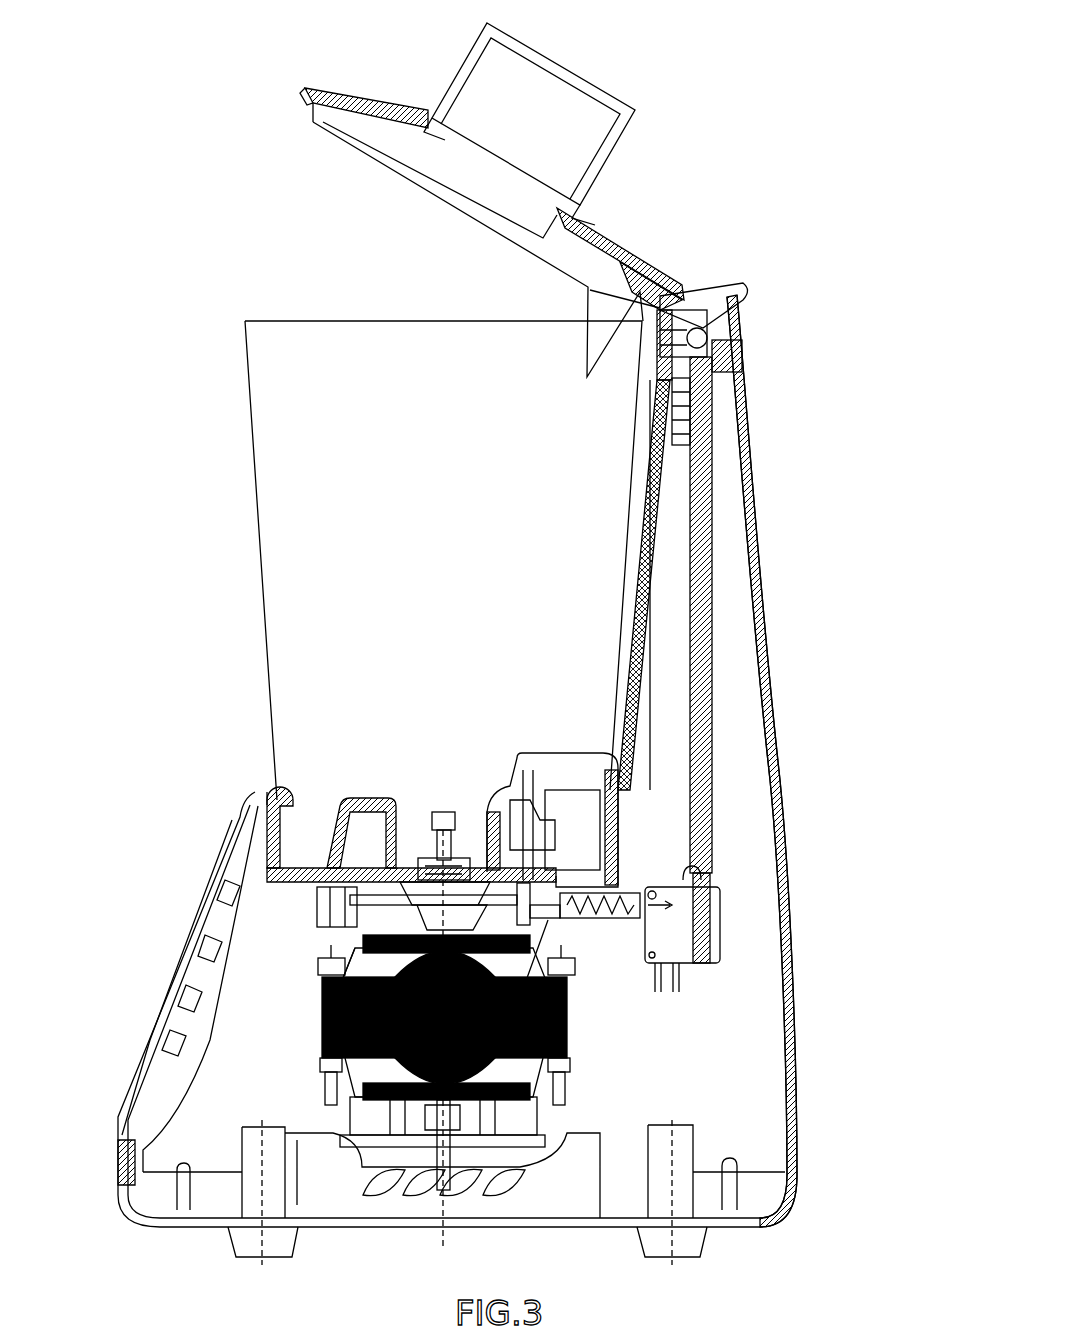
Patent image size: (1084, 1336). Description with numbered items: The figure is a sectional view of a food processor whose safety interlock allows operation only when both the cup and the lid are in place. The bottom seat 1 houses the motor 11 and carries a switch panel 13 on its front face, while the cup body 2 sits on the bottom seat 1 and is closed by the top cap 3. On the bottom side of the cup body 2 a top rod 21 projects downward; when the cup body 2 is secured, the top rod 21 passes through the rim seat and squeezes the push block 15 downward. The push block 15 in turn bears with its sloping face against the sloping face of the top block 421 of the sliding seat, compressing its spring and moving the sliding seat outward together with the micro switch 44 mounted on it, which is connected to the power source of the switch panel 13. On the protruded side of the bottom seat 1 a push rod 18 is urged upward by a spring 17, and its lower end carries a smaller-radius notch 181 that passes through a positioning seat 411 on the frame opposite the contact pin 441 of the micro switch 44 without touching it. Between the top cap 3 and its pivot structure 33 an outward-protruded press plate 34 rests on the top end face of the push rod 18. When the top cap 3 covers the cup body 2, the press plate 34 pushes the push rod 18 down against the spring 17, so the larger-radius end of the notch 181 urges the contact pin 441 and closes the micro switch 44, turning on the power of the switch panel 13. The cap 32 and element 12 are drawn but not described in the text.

The bottom seat 1 is at (520, 780).
The motor 11 is at (508, 780).
The jar bottom base 12 is at (437, 832).
The switch panel 13 is at (215, 860).
The push block 15 is at (523, 850).
The spring 17 is at (680, 398).
The push rod 18 is at (732, 591).
The notch 181 is at (685, 868).
The cup body 2 is at (385, 601).
The top rod 21 is at (520, 782).
The top cap 3 is at (551, 200).
The cap 32 is at (632, 130).
The pivot structure 33 is at (665, 257).
The press plate 34 is at (700, 291).
The positioning seat 411 is at (703, 883).
The top block 421 is at (548, 912).
The micro switch 44 is at (713, 948).
The contact pin 441 is at (693, 903).